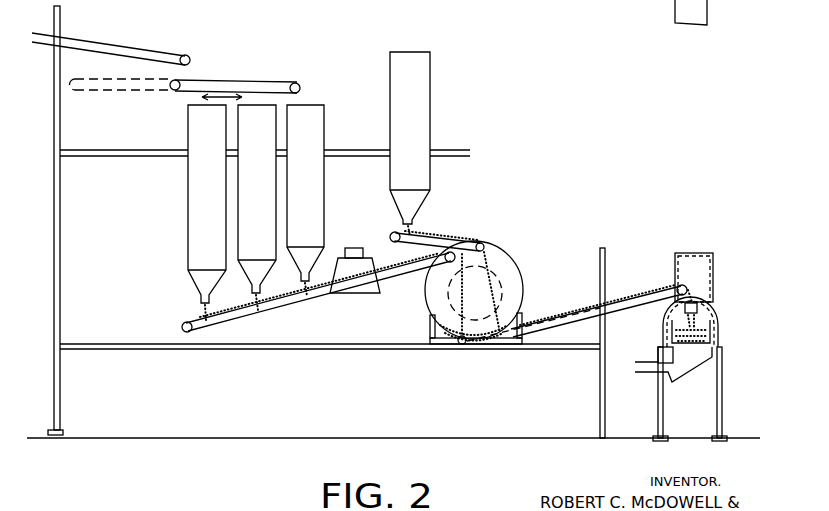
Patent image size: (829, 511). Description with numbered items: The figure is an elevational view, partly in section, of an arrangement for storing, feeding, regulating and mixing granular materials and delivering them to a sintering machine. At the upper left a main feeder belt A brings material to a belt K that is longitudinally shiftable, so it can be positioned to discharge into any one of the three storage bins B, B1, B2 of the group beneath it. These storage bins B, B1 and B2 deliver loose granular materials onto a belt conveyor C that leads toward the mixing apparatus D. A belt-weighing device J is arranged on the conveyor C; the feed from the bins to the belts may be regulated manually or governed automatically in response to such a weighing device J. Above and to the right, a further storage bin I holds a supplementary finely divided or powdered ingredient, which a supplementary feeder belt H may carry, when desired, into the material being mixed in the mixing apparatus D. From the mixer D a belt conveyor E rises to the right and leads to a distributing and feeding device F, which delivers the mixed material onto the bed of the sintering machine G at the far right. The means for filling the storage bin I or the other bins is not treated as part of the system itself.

The main feeder belt A is at (98, 43).
The longitudinally shiftable belt K is at (238, 82).
The storage bin B is at (190, 228).
The storage bin B1 is at (263, 200).
The storage bin B2 is at (313, 193).
The storage bin I is at (430, 110).
The belt conveyor C is at (288, 303).
The belt-weighing device J is at (370, 298).
The supplementary feeder belt H is at (447, 242).
The mixing apparatus D is at (505, 265).
The belt conveyor E is at (577, 307).
The distributing and feeding device F is at (715, 286).
The sintering machine G is at (718, 327).